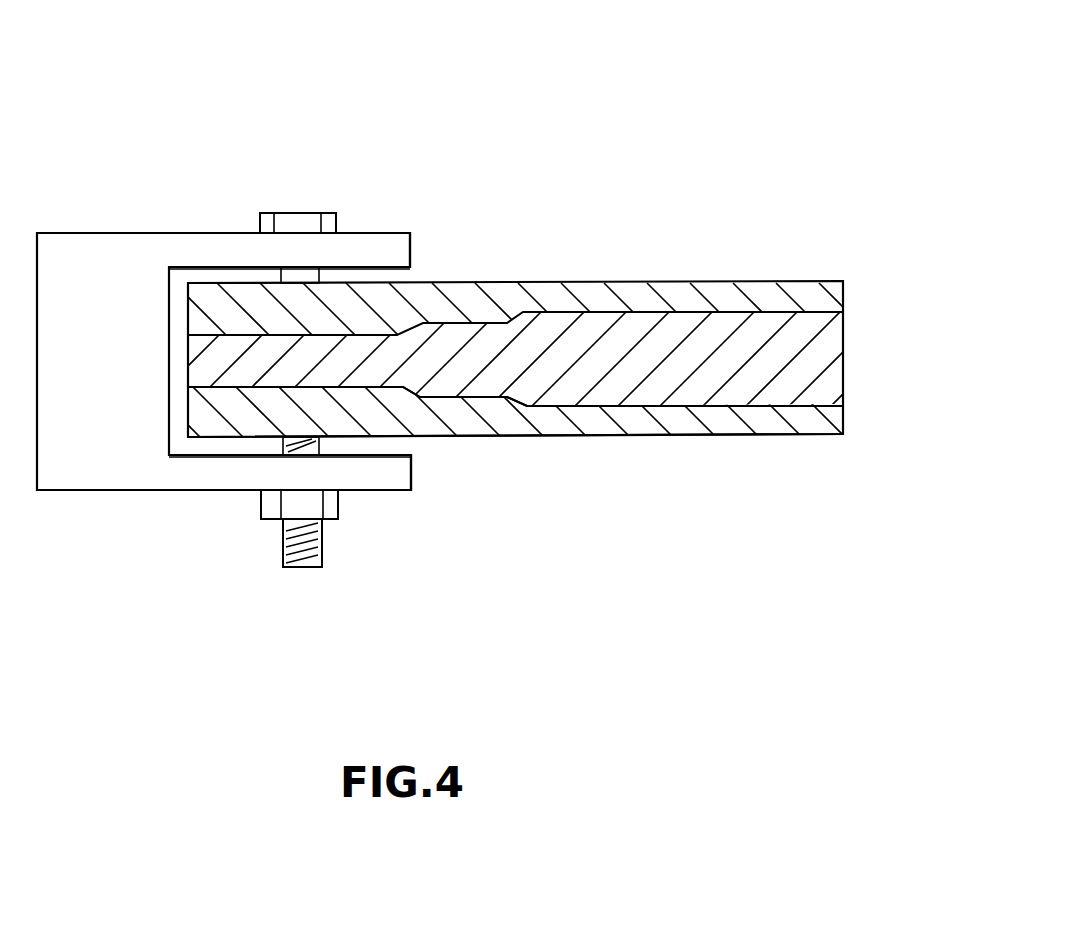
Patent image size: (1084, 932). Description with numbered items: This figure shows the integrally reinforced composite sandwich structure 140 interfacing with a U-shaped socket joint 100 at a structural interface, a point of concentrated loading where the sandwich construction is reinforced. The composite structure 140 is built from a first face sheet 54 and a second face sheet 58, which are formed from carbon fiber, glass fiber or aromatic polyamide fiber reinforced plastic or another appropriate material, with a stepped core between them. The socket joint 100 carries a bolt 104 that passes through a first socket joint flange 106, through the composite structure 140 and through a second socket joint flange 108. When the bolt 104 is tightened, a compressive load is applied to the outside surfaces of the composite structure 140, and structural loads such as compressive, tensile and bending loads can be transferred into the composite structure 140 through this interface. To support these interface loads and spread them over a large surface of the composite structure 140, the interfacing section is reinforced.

The integrally reinforced composite sandwich structure 140 is at (656, 90).
The U-shaped socket joint 100 is at (152, 233).
The bolt 104 is at (303, 213).
The first socket joint flange 106 is at (375, 232).
The second socket joint flange 108 is at (385, 491).
The first face sheet 54 is at (522, 281).
The second face sheet 58 is at (537, 436).